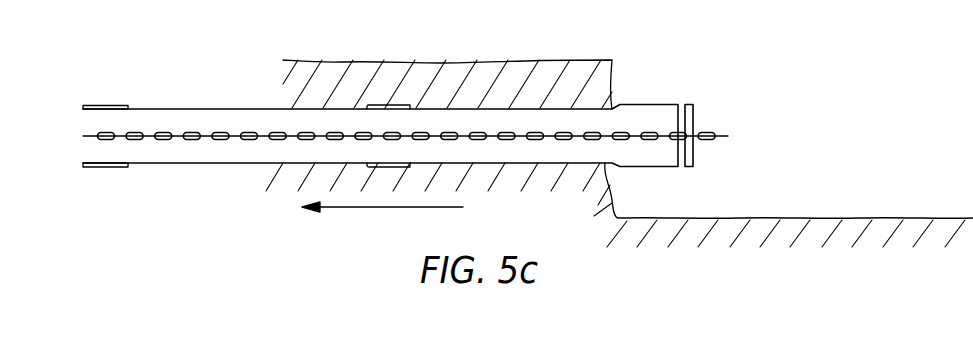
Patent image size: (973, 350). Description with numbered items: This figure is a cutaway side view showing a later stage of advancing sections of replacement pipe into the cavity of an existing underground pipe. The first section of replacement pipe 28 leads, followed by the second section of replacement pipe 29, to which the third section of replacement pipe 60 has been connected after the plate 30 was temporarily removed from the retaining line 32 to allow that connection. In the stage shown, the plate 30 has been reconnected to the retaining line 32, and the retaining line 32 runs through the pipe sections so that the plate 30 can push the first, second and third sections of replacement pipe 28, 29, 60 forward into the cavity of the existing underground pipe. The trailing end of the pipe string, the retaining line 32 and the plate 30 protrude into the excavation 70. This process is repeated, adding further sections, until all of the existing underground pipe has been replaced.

The first section of replacement pipe 28 is at (94, 105).
The second section of replacement pipe 29 is at (241, 108).
The plate 30 is at (688, 104).
The retaining line 32 is at (194, 132).
The third section of replacement pipe 60 is at (442, 108).
The excavation 70 is at (790, 218).